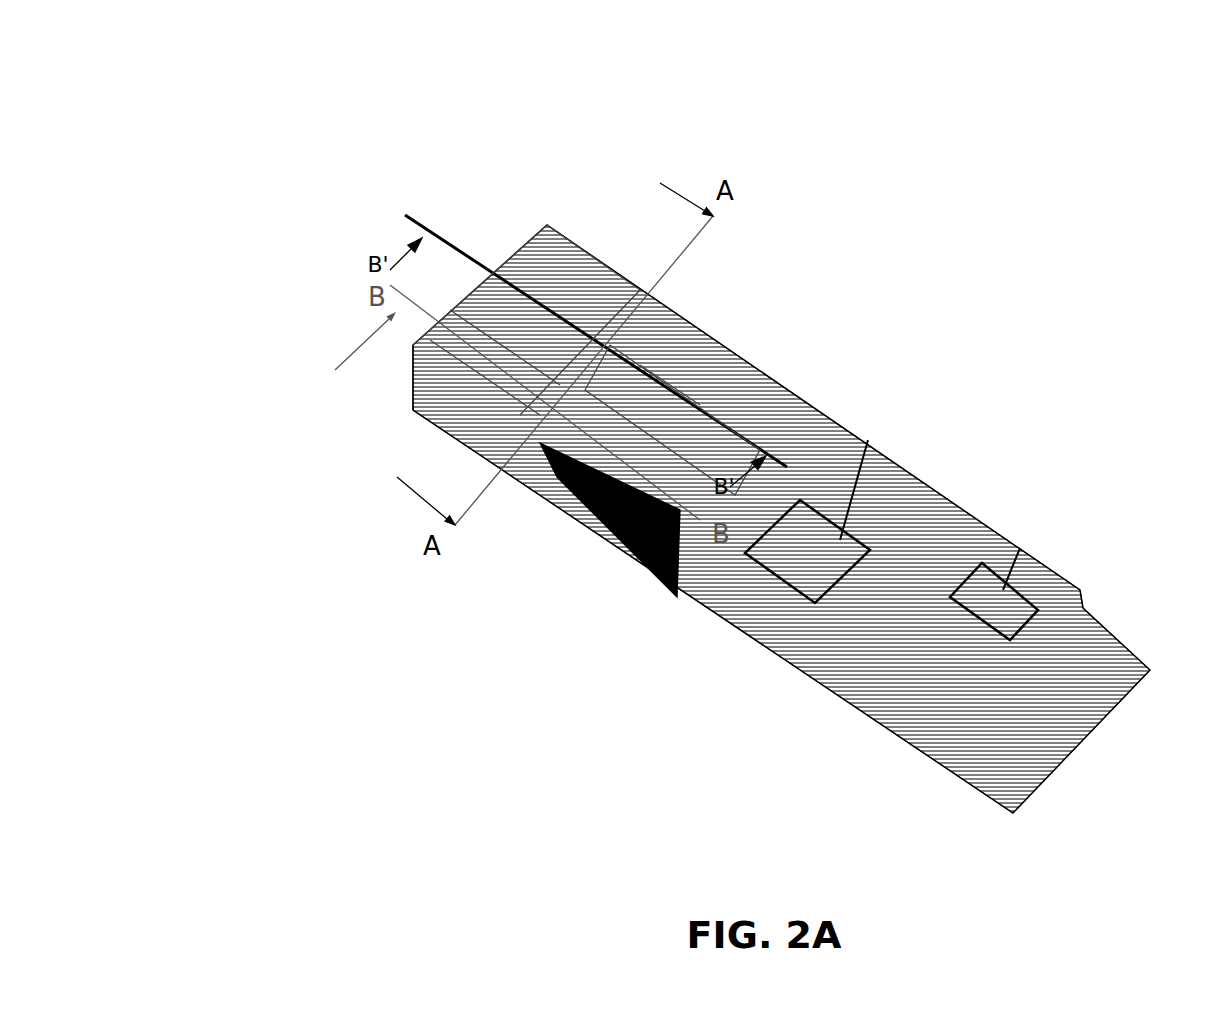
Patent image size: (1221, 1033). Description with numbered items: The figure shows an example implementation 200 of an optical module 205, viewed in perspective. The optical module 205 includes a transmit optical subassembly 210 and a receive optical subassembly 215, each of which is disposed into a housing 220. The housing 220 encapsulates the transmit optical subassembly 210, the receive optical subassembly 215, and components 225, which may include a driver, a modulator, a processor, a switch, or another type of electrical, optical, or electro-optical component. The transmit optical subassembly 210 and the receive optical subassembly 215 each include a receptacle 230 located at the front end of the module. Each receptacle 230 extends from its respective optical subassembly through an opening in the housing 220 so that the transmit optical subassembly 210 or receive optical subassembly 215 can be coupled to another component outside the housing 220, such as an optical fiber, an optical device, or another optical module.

The example implementation 200 is at (270, 50).
The optical module 205 is at (961, 417).
The transmit optical subassembly 210 is at (680, 390).
The receive optical subassembly 215 is at (580, 515).
The housing 220 is at (807, 700).
The components 225 is at (969, 709).
The receptacle 230 is at (569, 361).